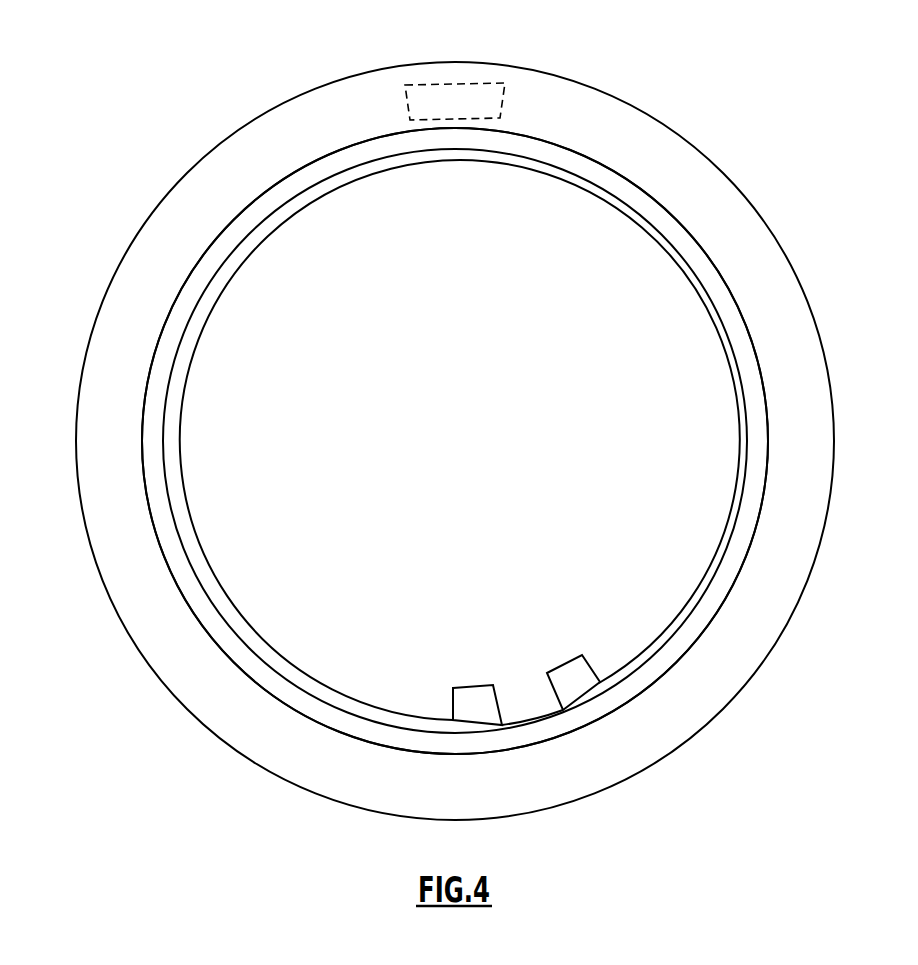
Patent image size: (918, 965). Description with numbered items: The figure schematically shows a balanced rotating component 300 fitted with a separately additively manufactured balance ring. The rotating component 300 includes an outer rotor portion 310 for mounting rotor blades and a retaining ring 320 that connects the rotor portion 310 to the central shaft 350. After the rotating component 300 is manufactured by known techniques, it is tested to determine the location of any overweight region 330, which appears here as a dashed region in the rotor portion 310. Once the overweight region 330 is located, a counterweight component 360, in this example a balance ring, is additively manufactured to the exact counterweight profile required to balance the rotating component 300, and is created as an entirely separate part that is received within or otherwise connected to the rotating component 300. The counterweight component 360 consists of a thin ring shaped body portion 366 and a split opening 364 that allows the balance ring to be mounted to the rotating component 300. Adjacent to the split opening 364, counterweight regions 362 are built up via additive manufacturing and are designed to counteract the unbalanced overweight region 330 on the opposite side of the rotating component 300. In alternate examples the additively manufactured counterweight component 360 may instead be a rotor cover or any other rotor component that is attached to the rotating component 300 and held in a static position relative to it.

The rotating component 300 is at (118, 200).
The rotor portion 310 is at (243, 160).
The retaining ring 320 is at (341, 172).
The overweight region 330 is at (445, 102).
The shaft 350 is at (477, 451).
The counterweight component 360 is at (657, 238).
The counterweight regions 362 is at (472, 688).
The split opening 364 is at (513, 703).
The ring shaped body portion 366 is at (729, 362).